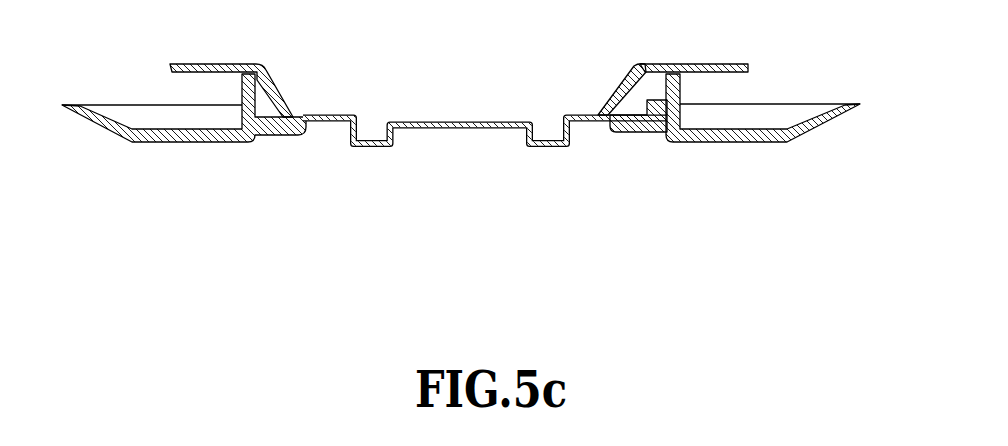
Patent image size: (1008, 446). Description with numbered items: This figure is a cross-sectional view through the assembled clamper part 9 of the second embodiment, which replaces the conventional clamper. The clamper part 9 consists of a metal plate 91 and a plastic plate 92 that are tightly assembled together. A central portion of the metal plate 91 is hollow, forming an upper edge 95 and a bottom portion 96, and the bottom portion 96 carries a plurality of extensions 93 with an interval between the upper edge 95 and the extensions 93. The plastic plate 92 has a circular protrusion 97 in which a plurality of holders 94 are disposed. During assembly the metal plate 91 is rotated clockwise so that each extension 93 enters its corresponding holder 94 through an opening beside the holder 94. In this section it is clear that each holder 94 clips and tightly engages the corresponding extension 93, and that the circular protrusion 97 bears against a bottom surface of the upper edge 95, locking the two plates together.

The clamper part 9 is at (457, 138).
The metal plate 91 is at (615, 92).
The plastic plate 92 is at (755, 142).
The extension 93 is at (609, 116).
The holder 94 is at (651, 132).
The upper edge 95 is at (215, 63).
The bottom portion 96 is at (372, 146).
The circular protrusion 97 is at (680, 86).